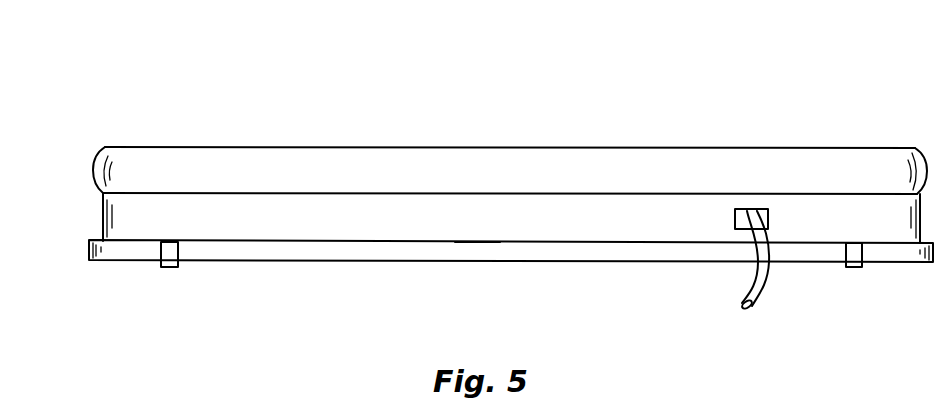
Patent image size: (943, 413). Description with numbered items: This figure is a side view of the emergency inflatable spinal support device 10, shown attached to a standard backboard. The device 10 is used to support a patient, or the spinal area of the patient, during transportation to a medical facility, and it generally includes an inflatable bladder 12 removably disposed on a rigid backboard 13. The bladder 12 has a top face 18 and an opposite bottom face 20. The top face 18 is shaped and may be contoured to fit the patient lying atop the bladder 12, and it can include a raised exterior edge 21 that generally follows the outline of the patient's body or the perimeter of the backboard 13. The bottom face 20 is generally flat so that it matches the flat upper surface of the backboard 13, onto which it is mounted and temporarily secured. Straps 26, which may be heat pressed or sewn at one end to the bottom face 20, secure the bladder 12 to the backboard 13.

The emergency inflatable spinal support device 10 is at (646, 96).
The inflatable bladder 12 is at (285, 213).
The rigid backboard 13 is at (658, 250).
The top face 18 is at (417, 147).
The bottom face 20 is at (458, 242).
The raised exterior edge 21 is at (258, 160).
The straps 26 is at (167, 267).